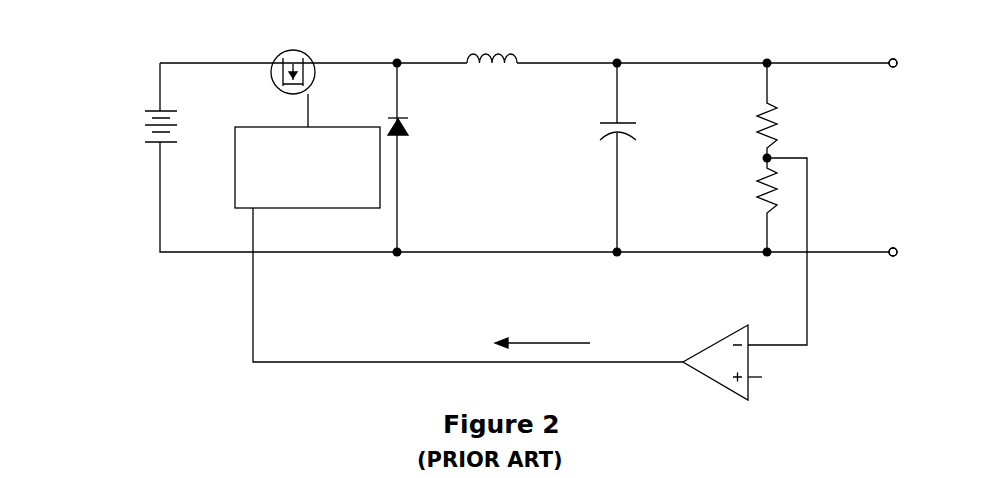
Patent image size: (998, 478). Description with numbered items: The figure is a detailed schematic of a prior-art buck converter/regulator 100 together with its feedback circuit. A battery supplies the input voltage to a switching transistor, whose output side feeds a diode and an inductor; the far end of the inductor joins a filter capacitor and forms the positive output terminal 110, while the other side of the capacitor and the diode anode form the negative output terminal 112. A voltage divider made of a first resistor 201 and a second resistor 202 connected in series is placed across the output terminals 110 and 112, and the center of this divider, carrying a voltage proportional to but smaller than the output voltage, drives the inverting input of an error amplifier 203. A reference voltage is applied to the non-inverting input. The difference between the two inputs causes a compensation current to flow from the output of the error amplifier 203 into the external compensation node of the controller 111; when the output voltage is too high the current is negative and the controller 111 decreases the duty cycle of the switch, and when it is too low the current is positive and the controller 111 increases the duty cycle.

The buck converter/regulator 100 is at (197, 287).
The positive output terminal 110 is at (907, 52).
The controller 111 is at (255, 127).
The negative output terminal 112 is at (899, 262).
The resistor R1 201 is at (777, 106).
The resistor R2 202 is at (753, 169).
The error amplifier 203 is at (728, 386).